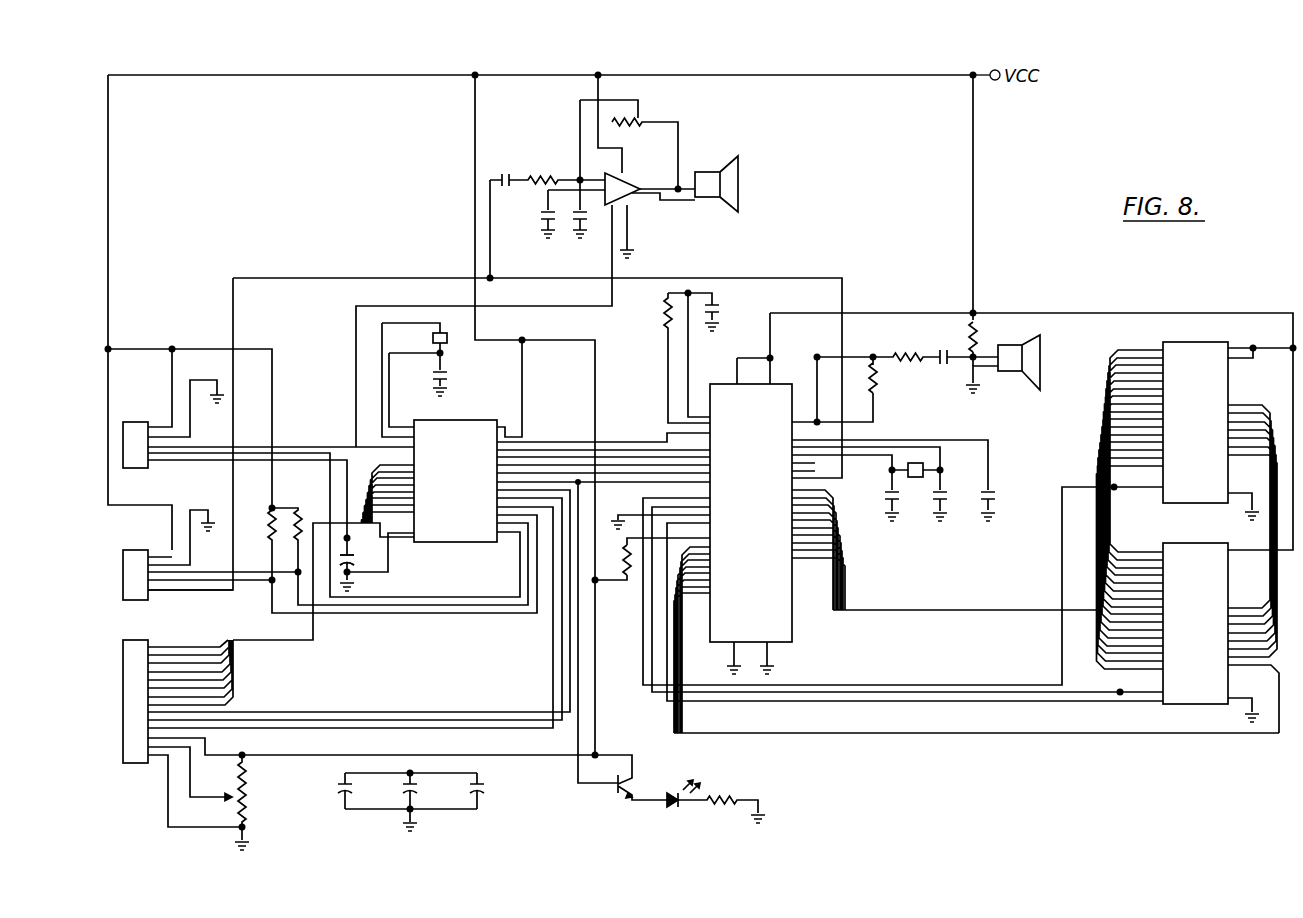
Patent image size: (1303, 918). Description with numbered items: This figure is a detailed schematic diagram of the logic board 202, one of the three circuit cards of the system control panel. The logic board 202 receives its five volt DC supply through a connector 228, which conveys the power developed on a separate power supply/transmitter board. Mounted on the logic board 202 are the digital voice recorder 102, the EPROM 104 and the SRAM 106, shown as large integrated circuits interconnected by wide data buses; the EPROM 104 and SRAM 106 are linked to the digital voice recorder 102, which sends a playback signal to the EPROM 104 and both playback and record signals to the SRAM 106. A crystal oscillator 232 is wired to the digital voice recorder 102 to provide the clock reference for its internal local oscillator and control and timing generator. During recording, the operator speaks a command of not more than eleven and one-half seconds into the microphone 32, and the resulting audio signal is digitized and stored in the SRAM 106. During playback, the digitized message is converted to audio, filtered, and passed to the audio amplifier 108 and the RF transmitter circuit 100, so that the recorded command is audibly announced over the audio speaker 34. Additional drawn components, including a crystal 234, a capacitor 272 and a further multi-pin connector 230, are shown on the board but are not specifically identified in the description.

The logic board 202 is at (413, 62).
The audio amplifier 108 is at (632, 200).
The audio speaker 34 is at (738, 190).
The crystal oscillator 234 is at (458, 345).
The RF transmitter circuit 100 is at (470, 535).
The capacitor 272 is at (370, 563).
The digital voice recorder 102 is at (778, 630).
The crystal oscillator 232 is at (917, 486).
The microphone 32 is at (1032, 368).
The EPROM 104 is at (1178, 342).
The SRAM 106 is at (1180, 553).
The connector 228 is at (123, 580).
The keyboard connector 230 is at (128, 705).